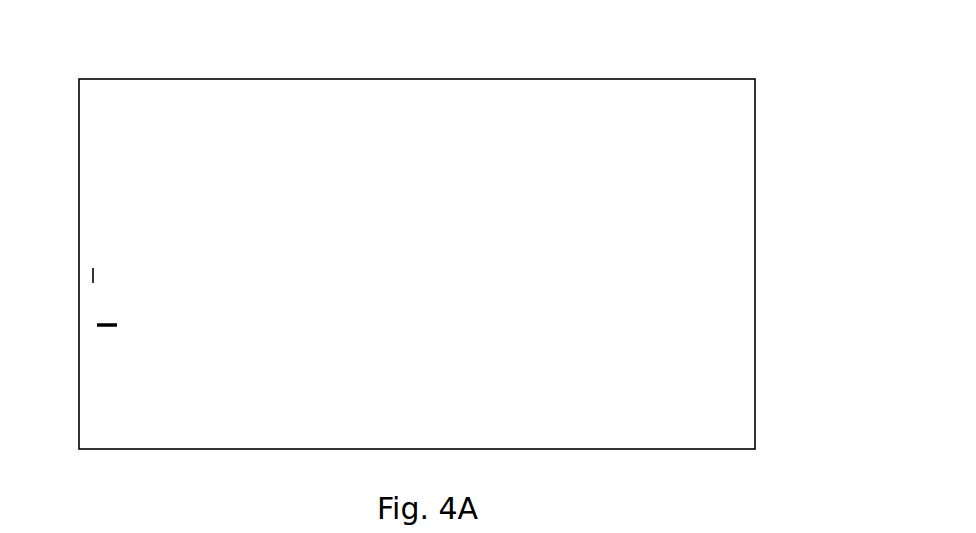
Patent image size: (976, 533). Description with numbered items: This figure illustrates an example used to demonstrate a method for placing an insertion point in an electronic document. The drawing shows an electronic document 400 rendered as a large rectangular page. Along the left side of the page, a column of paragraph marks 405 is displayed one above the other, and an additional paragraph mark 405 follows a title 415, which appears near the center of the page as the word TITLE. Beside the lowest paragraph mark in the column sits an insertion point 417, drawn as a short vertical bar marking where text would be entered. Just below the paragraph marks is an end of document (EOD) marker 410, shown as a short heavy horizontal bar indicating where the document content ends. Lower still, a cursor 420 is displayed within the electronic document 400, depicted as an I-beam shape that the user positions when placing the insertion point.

The electronic document 400 is at (736, 63).
The paragraph marks 405 is at (298, 221).
The end of document (EOD) marker 410 is at (76, 302).
The title 415 is at (401, 271).
The insertion point 417 is at (64, 253).
The cursor 420 is at (72, 391).